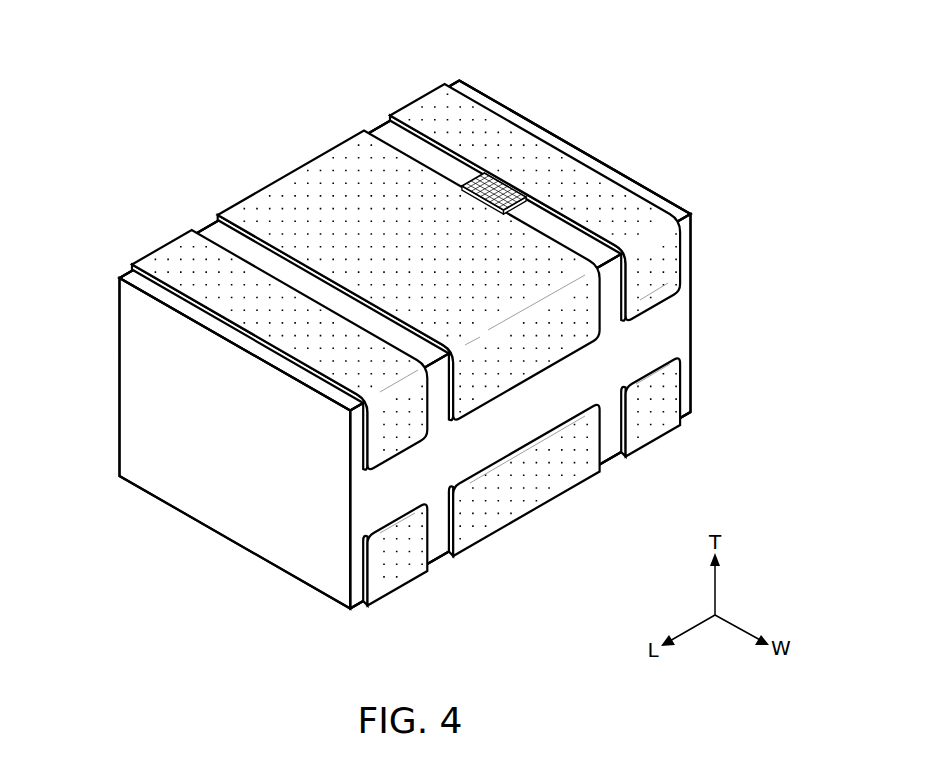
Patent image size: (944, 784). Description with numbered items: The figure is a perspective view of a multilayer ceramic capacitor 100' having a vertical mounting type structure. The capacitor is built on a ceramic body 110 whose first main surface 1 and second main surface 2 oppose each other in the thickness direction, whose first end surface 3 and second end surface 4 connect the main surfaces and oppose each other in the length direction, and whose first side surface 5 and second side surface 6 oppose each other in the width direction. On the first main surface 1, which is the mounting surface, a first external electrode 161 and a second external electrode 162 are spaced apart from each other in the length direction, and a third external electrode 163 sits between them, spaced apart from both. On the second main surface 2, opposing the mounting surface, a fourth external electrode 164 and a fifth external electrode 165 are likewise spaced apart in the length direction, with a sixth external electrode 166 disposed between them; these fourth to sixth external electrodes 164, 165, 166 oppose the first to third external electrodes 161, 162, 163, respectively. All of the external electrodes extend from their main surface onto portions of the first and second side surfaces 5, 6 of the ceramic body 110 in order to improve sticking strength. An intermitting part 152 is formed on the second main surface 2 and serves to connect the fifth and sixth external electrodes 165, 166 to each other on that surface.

The multilayer ceramic capacitor 100' is at (405, 318).
The ceramic body 110 is at (243, 513).
The first main surface 1 is at (455, 573).
The second main surface 2 is at (560, 208).
The first end surface 3 is at (135, 380).
The second end surface 4 is at (520, 93).
The first side surface 5 is at (365, 110).
The second side surface 6 is at (640, 346).
The first external electrode 161 is at (400, 573).
The second external electrode 162 is at (655, 425).
The third external electrode 163 is at (528, 497).
The fourth external electrode 164 is at (175, 250).
The fifth external electrode 165 is at (430, 100).
The sixth external electrode 166 is at (303, 177).
The intermitting part 152 is at (500, 190).